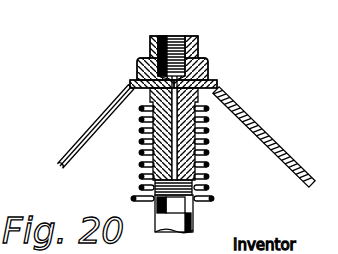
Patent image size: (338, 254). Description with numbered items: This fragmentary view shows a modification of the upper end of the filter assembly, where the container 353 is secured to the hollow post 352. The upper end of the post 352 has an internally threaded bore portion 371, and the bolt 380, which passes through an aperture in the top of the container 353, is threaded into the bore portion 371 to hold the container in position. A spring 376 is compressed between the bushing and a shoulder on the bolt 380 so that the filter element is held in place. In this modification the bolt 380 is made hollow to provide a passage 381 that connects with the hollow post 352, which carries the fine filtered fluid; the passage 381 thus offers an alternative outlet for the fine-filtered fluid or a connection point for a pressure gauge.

The bolt 380 is at (199, 55).
The passage 381 is at (150, 58).
The container 353 is at (245, 118).
The internally threaded bore portion 371 is at (133, 199).
The spring 376 is at (208, 146).
The post 352 is at (313, 187).